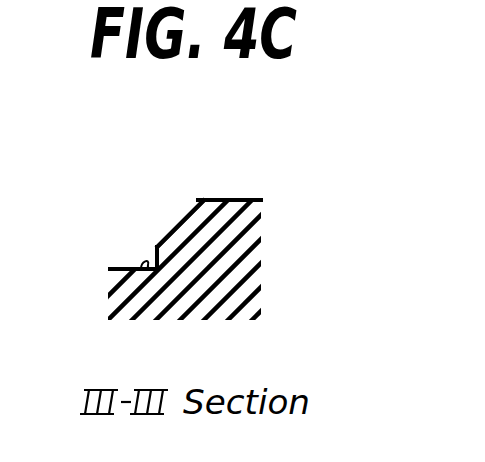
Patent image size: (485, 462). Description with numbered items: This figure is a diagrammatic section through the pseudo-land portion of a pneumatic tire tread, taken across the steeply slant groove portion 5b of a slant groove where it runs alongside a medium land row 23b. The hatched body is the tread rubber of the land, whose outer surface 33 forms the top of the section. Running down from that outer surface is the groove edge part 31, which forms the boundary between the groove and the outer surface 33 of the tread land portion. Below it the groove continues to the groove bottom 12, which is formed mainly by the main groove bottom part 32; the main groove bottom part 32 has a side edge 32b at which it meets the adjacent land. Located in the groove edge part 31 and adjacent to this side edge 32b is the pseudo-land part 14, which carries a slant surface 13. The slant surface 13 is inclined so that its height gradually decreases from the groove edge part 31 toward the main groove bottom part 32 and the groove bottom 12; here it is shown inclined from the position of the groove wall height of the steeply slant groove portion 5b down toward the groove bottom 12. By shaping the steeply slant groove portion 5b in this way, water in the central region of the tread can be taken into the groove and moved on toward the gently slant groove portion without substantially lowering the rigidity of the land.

The steeply slant groove portion 5b is at (102, 261).
The groove bottom 12 is at (134, 265).
The slant surface 13 is at (153, 261).
The pseudo-land part 14 is at (180, 211).
The groove edge part 31 is at (200, 199).
The main groove bottom part 32 is at (110, 268).
The outer surface of tread land portion 33 is at (222, 199).
The medium land row 23b is at (240, 199).
The side edge of main groove bottom part 32b is at (146, 270).